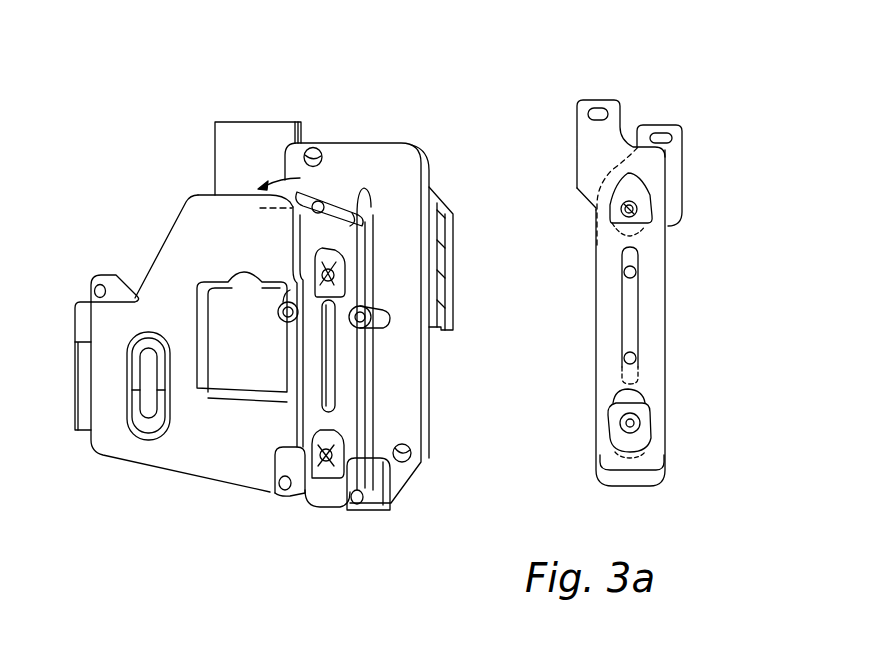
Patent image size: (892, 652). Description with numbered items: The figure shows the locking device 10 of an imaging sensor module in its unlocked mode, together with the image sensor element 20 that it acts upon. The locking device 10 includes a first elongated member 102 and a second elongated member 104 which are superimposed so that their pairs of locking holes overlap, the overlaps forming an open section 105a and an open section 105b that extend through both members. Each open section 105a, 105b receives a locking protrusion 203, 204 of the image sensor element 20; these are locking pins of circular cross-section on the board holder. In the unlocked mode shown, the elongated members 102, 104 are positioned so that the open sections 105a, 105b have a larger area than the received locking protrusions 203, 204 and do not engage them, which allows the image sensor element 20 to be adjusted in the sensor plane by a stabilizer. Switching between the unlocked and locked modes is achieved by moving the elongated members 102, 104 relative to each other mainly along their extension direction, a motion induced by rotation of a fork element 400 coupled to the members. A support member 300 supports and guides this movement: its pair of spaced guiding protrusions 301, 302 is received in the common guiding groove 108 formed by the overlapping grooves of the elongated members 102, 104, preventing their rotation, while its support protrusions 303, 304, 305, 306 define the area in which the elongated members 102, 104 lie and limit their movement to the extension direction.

The locking device 10 is at (377, 406).
The image sensor element 20 is at (260, 135).
The first elongated member 102 is at (672, 158).
The second elongated member 104 is at (585, 152).
The open section 105a is at (640, 188).
The open section 105b is at (645, 422).
The common guiding groove 108 is at (630, 310).
The locking protrusion 203 is at (645, 216).
The locking protrusion 204 is at (632, 422).
The support member 300 is at (372, 183).
The guiding protrusion 301 is at (624, 270).
The guiding protrusion 302 is at (624, 358).
The support protrusion 303 is at (285, 322).
The support protrusion 304 is at (380, 320).
The support protrusion 305 is at (283, 487).
The support protrusion 306 is at (360, 480).
The fork element 400 is at (330, 195).